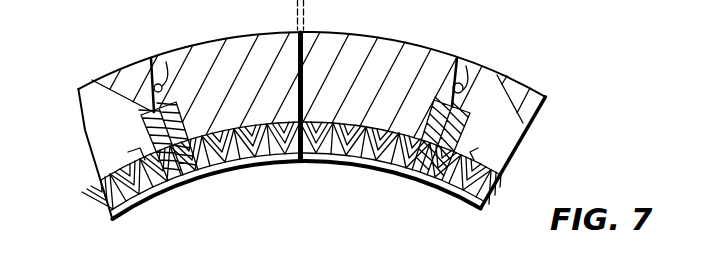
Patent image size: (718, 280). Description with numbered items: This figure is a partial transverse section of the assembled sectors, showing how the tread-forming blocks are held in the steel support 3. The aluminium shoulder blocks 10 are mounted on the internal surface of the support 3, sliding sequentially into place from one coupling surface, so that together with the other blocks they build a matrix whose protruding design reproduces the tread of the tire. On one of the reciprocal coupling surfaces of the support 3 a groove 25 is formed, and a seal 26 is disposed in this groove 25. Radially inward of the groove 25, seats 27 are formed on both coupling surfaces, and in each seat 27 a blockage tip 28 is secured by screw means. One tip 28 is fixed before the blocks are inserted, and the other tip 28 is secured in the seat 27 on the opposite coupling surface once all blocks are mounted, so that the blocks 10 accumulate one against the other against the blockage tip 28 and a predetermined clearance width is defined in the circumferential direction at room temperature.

The support 3 is at (409, 44).
The shoulder block 10 is at (367, 166).
The groove 25 is at (166, 80).
The seal 26 is at (152, 88).
The seat 27 is at (134, 150).
The blockage tip 28 is at (143, 125).